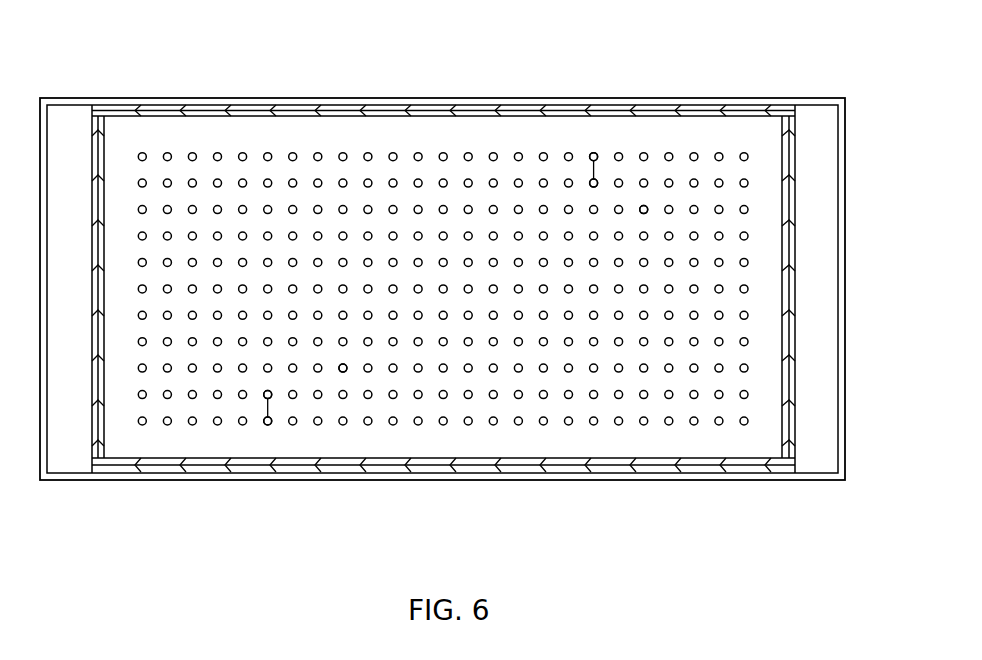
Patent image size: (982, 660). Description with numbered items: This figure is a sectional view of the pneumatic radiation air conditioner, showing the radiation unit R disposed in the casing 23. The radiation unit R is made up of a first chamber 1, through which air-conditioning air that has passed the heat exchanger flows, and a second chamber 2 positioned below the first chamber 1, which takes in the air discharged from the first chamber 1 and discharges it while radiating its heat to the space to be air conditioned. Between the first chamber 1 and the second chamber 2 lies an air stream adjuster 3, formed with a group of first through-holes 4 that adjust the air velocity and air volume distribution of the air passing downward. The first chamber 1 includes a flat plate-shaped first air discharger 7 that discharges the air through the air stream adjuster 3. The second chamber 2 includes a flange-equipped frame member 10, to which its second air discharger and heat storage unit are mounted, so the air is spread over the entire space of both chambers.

The first chamber 1 is at (790, 192).
The second chamber 2 is at (128, 97).
The air stream adjuster 3 is at (581, 150).
The first through-holes 4 is at (643, 205).
The first air discharger 7 is at (665, 132).
The flange-equipped frame member 10 is at (190, 104).
The casing 23 is at (797, 116).
The radiation unit R is at (410, 105).